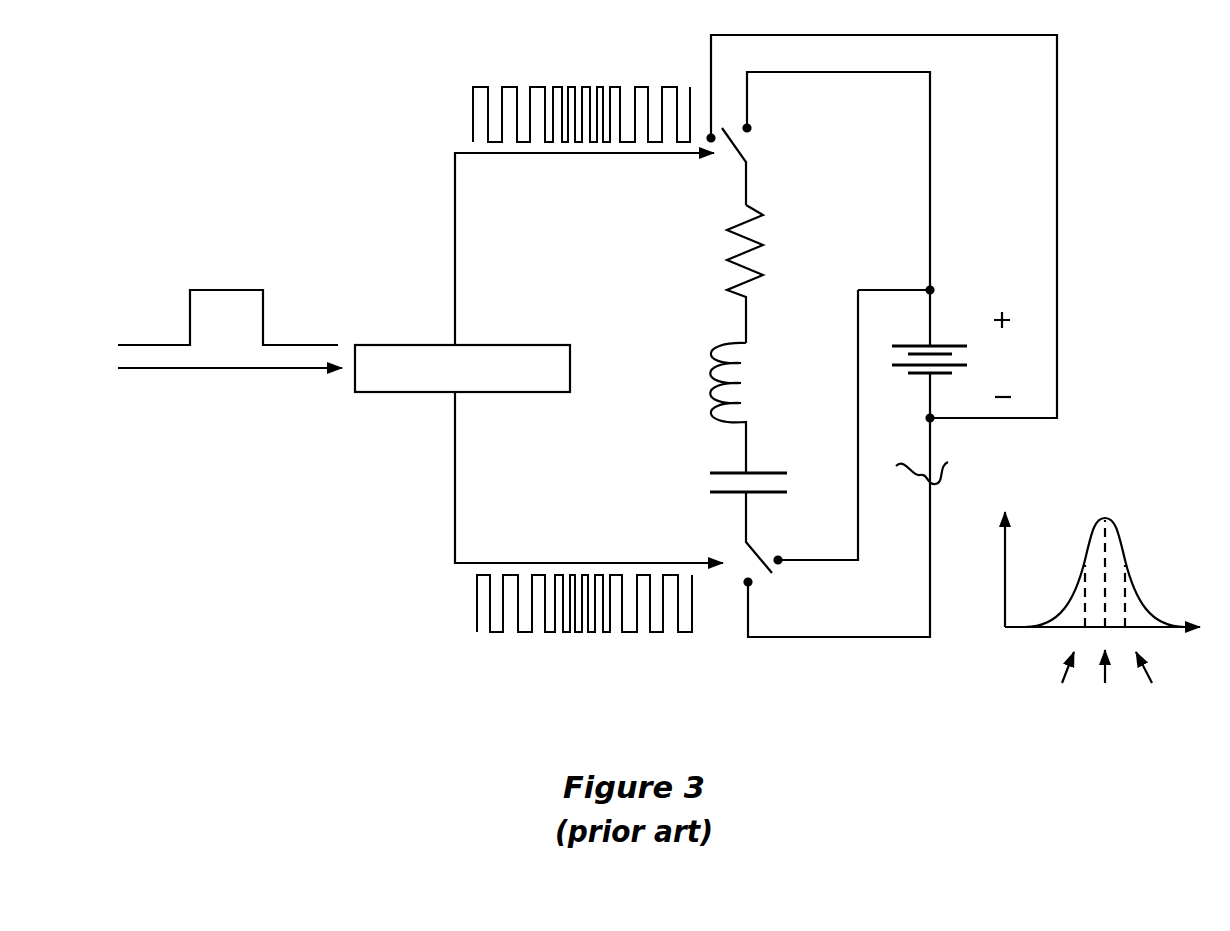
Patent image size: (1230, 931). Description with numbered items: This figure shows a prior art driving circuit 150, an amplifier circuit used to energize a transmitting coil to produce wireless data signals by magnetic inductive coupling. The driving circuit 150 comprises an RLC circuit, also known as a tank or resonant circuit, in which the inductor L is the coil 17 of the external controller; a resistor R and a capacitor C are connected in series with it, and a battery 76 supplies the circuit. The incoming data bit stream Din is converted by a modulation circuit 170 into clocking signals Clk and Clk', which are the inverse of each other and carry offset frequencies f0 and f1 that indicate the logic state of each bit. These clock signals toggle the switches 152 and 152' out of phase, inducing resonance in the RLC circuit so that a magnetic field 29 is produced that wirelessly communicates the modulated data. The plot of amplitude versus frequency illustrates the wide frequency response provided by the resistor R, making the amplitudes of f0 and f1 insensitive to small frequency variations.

The driving circuit 150 is at (278, 126).
The switch 152 is at (751, 165).
The switch 152' is at (775, 547).
The modulation circuit 170 is at (462, 368).
The coil 17 is at (770, 408).
The battery 76 is at (959, 354).
The magnetic field 29 is at (950, 499).